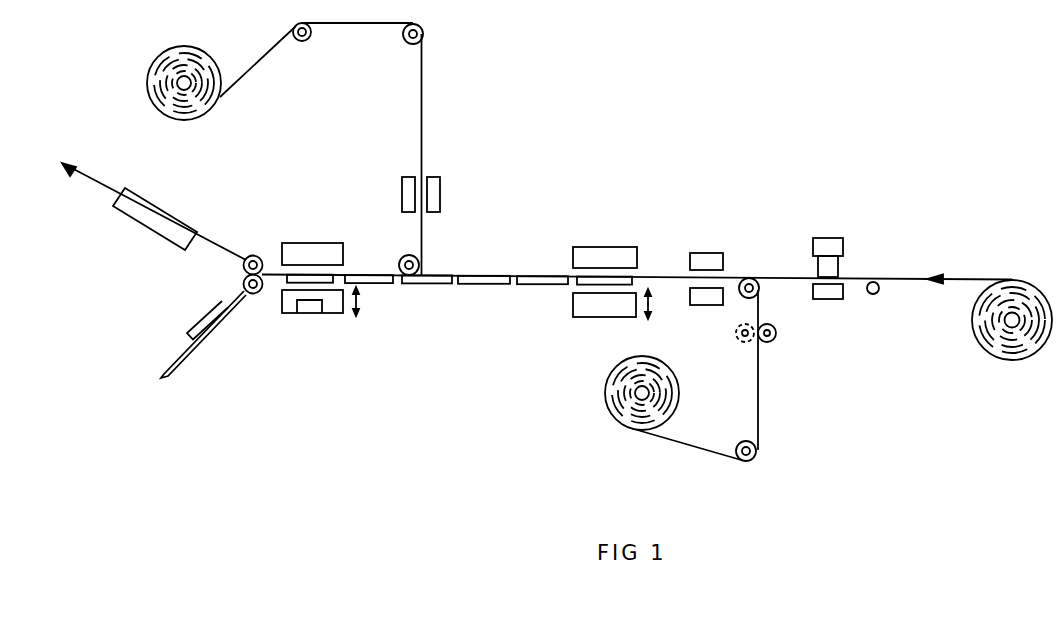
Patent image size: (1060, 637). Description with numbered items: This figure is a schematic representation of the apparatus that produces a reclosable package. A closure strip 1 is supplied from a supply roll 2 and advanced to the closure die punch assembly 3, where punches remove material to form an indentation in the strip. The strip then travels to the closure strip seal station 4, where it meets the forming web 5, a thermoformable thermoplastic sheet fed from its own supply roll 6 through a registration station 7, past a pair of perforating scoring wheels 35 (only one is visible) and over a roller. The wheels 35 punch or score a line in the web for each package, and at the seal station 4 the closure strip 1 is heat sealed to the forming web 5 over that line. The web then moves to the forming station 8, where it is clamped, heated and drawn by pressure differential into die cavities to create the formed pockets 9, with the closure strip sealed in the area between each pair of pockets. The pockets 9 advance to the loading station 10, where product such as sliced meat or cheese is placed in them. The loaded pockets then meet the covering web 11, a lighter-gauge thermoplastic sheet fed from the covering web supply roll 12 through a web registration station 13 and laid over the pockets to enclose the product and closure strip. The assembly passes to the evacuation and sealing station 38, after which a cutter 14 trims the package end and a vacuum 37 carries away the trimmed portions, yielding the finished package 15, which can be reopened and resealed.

The closure strip 1 is at (916, 281).
The supply roll 2 is at (986, 352).
The closure die punch assembly 3 is at (836, 238).
The closure strip seal station 4 is at (711, 253).
The forming web 5 is at (688, 442).
The supply roll 6 is at (607, 410).
The registration station 7 is at (759, 386).
The forming station 8 is at (608, 247).
The formed pockets 9 is at (370, 284).
The loading station 10 is at (481, 275).
The covering web 11 is at (420, 125).
The covering web supply roll 12 is at (162, 52).
The web registration station 13 is at (443, 192).
The cutter 14 is at (255, 255).
The finished package 15 is at (216, 318).
The perforating scoring wheels 35 is at (735, 338).
The vacuum 37 is at (140, 220).
The evacuation and sealing station 38 is at (308, 314).